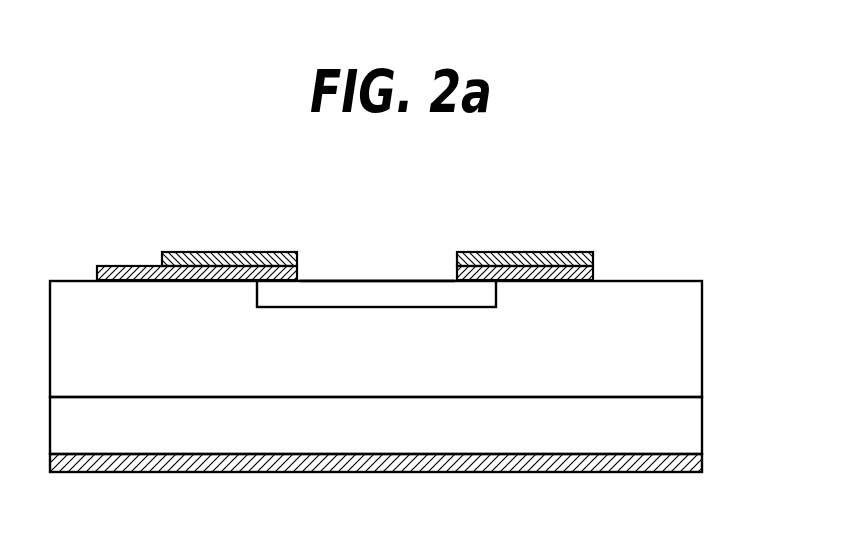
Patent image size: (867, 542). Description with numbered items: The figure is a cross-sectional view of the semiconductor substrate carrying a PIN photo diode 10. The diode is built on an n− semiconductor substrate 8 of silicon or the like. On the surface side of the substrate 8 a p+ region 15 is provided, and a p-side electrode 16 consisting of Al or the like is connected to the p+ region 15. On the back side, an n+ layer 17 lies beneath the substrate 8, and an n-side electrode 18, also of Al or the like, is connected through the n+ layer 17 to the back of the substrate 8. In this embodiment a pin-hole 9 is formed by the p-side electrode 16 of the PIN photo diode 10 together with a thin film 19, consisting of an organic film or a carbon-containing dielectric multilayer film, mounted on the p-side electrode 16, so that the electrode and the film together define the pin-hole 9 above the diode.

The n− semiconductor substrate 8 is at (688, 338).
The pin-hole 9 is at (442, 265).
The PIN photo diode 10 is at (685, 263).
The p+ region 15 is at (345, 293).
The p-side electrode 16 is at (143, 267).
The n+ layer 17 is at (687, 425).
The n-side electrode 18 is at (667, 467).
The thin film 19 is at (537, 253).